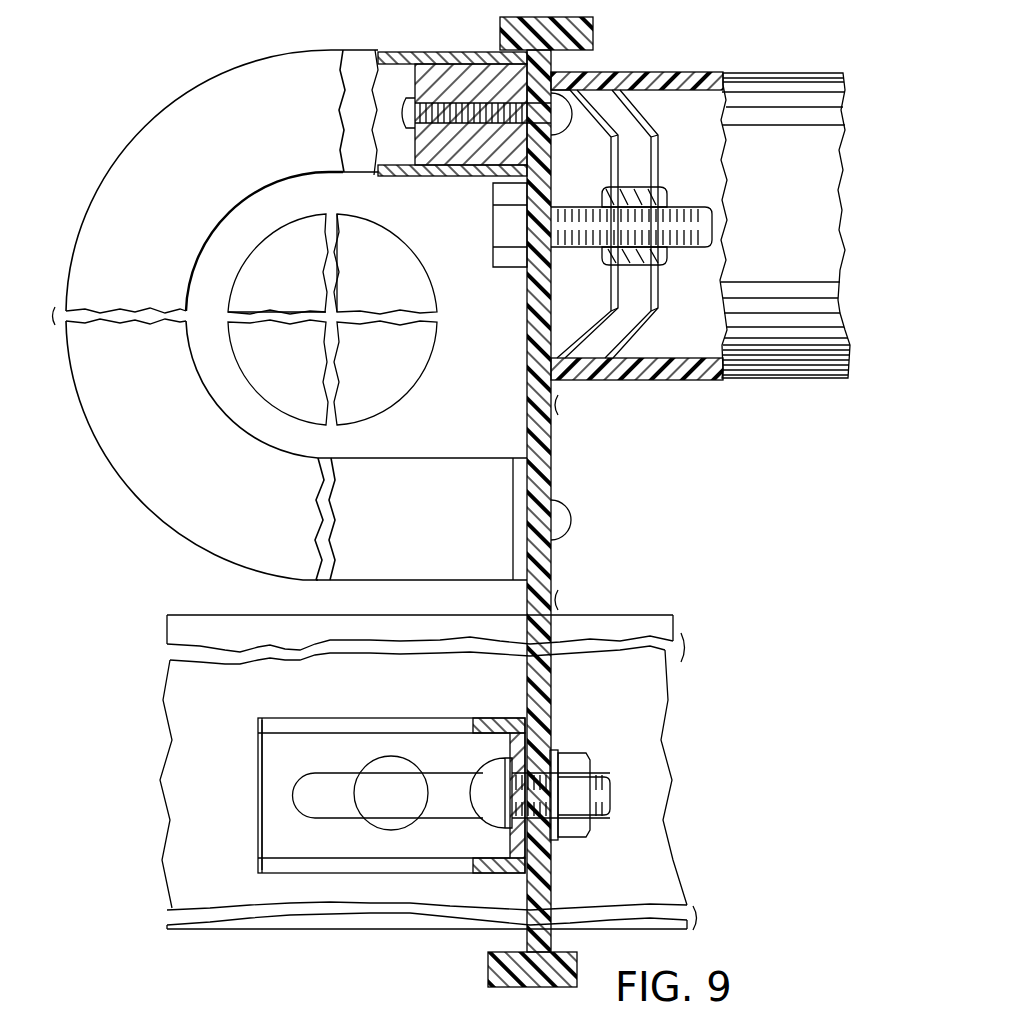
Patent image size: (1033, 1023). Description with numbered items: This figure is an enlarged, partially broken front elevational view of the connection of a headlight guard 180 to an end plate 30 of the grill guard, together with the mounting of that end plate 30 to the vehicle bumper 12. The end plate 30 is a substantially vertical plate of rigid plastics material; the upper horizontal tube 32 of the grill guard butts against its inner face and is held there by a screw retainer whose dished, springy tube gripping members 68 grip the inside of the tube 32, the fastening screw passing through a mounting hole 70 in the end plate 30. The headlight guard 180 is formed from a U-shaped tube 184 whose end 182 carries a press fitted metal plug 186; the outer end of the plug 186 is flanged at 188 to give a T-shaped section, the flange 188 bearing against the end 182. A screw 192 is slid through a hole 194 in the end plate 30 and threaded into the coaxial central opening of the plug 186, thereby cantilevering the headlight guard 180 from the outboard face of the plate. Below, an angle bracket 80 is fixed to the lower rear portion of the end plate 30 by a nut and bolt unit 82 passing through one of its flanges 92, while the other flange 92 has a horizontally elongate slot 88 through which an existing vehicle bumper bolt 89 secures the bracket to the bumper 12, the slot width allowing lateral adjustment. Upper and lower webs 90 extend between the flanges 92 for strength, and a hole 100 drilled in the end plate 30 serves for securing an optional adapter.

The front bumper 12 is at (686, 748).
The end plate 30 is at (566, 465).
The upper horizontal tube 32 is at (768, 95).
The tube gripping member 68 is at (585, 350).
The mounting hole 70 is at (520, 245).
The angle bracket 80 is at (240, 810).
The nut and bolt unit 82 is at (580, 760).
The horizontally elongate slot 88 is at (335, 812).
The vehicle bumper bolt 89 is at (386, 820).
The web 90 is at (365, 722).
The flange 92 is at (268, 745).
The hole 100 is at (552, 750).
The headlight guard 180 is at (236, 82).
The end of tube 182 is at (505, 62).
The U-shaped tube 184 is at (368, 78).
The plug 186 is at (460, 155).
The flange 188 is at (528, 45).
The screw 192 is at (568, 120).
The hole 194 is at (578, 100).